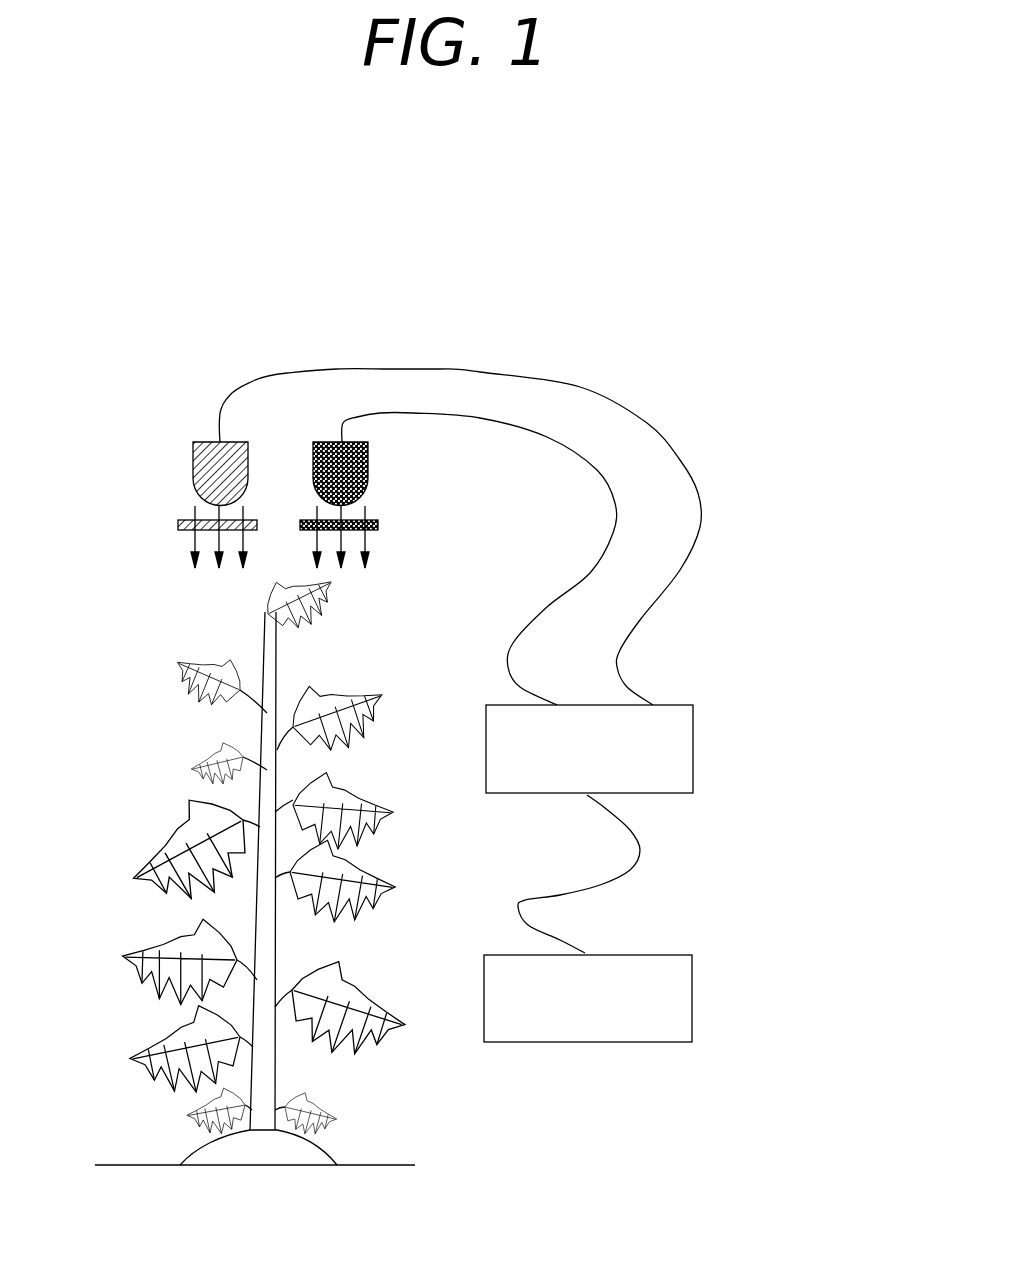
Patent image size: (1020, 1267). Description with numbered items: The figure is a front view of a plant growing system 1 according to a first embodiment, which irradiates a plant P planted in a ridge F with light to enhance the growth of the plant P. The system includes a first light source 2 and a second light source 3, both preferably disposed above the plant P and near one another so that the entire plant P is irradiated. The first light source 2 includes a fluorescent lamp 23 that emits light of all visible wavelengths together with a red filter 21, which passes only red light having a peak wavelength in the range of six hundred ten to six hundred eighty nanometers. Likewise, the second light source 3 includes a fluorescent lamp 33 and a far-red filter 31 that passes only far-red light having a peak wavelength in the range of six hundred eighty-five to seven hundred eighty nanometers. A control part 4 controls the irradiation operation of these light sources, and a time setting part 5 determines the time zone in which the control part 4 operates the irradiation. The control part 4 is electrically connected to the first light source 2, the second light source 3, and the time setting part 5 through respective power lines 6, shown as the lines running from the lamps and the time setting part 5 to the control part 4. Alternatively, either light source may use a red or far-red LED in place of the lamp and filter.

The plant growing system 1 is at (299, 315).
The first light source 2 is at (385, 445).
The second light source 3 is at (168, 448).
The red filter 21 is at (377, 530).
The fluorescent lamp 23 is at (368, 467).
The far-red filter 31 is at (182, 527).
The fluorescent lamp 33 is at (193, 468).
The control part 4 is at (695, 727).
The time setting part 5 is at (693, 975).
The power lines 6 is at (692, 483).
The plant P is at (180, 828).
The ridge F is at (208, 1150).